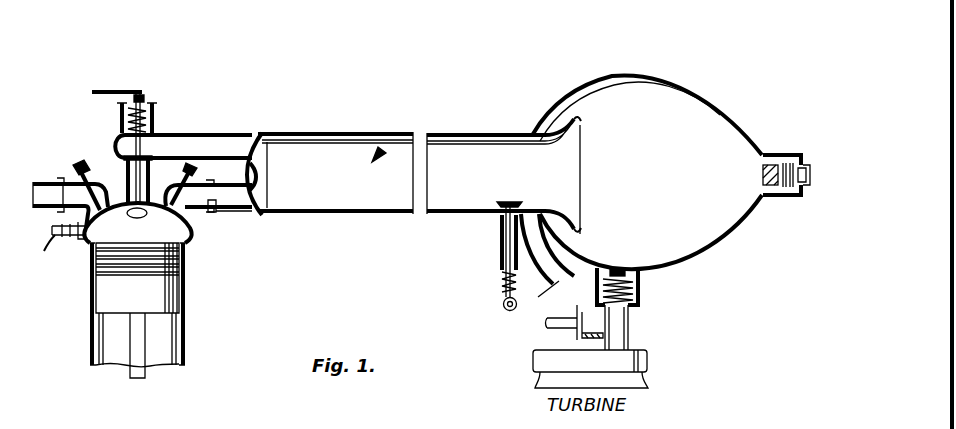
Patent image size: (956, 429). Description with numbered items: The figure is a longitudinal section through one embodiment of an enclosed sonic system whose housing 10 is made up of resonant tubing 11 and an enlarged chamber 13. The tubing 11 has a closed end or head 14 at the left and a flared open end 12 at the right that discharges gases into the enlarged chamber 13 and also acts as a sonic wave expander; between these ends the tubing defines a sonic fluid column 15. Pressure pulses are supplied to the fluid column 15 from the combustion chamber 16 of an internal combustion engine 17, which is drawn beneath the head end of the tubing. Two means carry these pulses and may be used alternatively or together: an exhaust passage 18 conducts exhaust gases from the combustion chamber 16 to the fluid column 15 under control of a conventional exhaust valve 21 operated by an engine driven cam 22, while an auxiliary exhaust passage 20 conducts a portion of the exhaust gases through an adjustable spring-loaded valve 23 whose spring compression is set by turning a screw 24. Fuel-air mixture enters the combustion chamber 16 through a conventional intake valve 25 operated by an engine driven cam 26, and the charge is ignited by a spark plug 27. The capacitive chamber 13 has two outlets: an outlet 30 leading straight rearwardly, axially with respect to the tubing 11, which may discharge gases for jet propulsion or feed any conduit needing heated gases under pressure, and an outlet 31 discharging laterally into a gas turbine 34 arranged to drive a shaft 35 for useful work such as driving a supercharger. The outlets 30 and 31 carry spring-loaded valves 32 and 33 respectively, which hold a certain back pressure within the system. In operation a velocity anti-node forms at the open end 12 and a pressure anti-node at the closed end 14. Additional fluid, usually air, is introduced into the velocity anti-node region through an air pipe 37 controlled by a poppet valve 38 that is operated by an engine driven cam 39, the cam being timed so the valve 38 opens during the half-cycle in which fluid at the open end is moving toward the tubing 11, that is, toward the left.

The housing 10 is at (492, 133).
The resonant tubing 11 is at (334, 130).
The flared open end 12 is at (579, 122).
The enlarged chamber 13 is at (696, 96).
The closed end or head 14 is at (247, 176).
The sonic fluid column 15 is at (381, 149).
The combustion chamber 16 is at (139, 238).
The internal combustion engine 17 is at (185, 300).
The exhaust passage 18 is at (238, 199).
The auxiliary exhaust passage 20 is at (236, 152).
The exhaust valve 21 is at (170, 209).
The engine driven cam 22 is at (208, 156).
The adjustable spring-loaded valve 23 is at (144, 157).
The screw 24 is at (141, 99).
The intake valve 25 is at (100, 213).
The engine driven cam 26 is at (78, 168).
The spark plug 27 is at (80, 238).
The outlet 30 is at (791, 151).
The outlet 31 is at (640, 299).
The spring-loaded valve 32 is at (760, 173).
The spring-loaded valve 33 is at (640, 289).
The gas turbine 34 is at (646, 357).
The shaft 35 is at (550, 328).
The air pipe 37 is at (558, 284).
The poppet valve 38 is at (517, 202).
The engine driven cam 39 is at (503, 303).